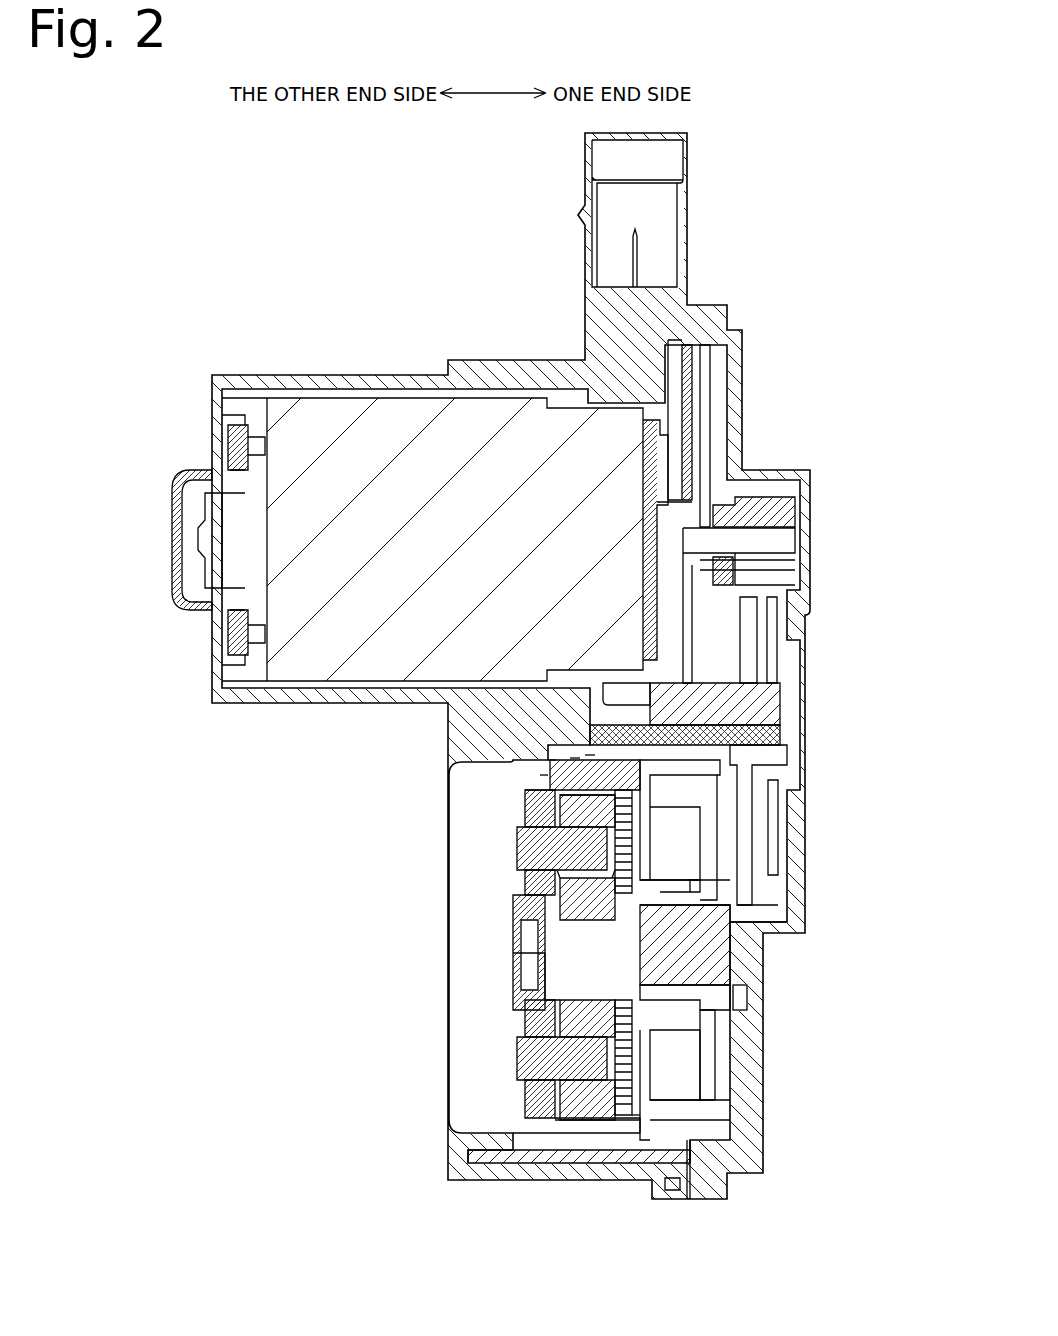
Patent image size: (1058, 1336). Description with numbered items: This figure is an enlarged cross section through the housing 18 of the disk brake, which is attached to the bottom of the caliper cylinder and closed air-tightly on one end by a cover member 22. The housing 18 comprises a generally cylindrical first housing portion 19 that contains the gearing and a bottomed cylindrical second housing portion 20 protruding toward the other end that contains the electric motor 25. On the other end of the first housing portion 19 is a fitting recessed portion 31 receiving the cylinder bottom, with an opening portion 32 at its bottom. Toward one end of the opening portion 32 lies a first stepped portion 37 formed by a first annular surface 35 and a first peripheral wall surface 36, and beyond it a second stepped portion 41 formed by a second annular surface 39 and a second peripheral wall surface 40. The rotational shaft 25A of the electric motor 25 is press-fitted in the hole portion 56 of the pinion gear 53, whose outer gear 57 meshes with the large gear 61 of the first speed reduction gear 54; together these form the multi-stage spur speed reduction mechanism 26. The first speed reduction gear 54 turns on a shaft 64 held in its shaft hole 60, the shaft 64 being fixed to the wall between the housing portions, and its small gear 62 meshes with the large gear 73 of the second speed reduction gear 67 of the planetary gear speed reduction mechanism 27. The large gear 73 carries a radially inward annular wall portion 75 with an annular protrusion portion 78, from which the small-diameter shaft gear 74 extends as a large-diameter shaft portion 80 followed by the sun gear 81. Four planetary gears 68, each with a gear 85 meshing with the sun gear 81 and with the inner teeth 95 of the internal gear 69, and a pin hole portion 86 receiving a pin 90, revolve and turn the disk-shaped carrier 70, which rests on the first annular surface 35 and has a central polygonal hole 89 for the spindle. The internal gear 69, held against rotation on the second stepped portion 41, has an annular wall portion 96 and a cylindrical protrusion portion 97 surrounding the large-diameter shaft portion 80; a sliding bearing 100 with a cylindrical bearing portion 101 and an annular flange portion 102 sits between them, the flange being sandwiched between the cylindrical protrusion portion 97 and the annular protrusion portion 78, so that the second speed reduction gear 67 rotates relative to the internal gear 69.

The housing 18 is at (444, 1182).
The first housing portion 19 is at (495, 1165).
The second housing portion 20 is at (240, 373).
The cover member 22 is at (745, 348).
The electric motor 25 is at (240, 530).
The rotational shaft 25A is at (790, 538).
The multi-stage spur speed reduction mechanism 26 is at (795, 655).
The planetary gear speed reduction mechanism 27 is at (732, 1122).
The fitting recessed portion 31 is at (470, 1133).
The opening portion 32 is at (530, 815).
The first annular surface 35 is at (530, 790).
The first peripheral wall surface 36 is at (545, 780).
The first stepped portion 37 is at (474, 300).
The second annular surface 39 is at (572, 755).
The second peripheral wall surface 40 is at (588, 758).
The second stepped portion 41 is at (566, 300).
The pinion gear 53 is at (748, 460).
The first speed reduction gear 54 is at (772, 810).
The hole portion 56 is at (755, 500).
The gear 57 is at (780, 566).
The shaft hole 60 is at (740, 720).
The large gear 61 is at (772, 578).
The small gear 62 is at (760, 770).
The shaft 64 is at (780, 735).
The second speed reduction gear 67 is at (745, 1062).
The planetary gears 68 is at (520, 897).
The internal gear 69 is at (575, 1152).
The carrier 70 is at (518, 1002).
The large gear 73 is at (700, 1163).
The small-diameter shaft gear 74 is at (732, 962).
The annular wall portion 75 is at (725, 1038).
The annular protrusion portion 78 is at (712, 1002).
The large-diameter shaft portion 80 is at (702, 946).
The sun gear 81 is at (720, 908).
The gear 85 is at (540, 932).
The pin hole portion 86 is at (560, 1047).
The polygonal hole 89 is at (522, 972).
The pin 90 is at (580, 882).
The inner teeth 95 is at (545, 842).
The annular wall portion 96 is at (562, 1077).
The cylindrical protrusion portion 97 is at (628, 1136).
The sliding bearing 100 is at (695, 890).
The cylindrical bearing portion 101 is at (745, 858).
The annular flange portion 102 is at (738, 872).